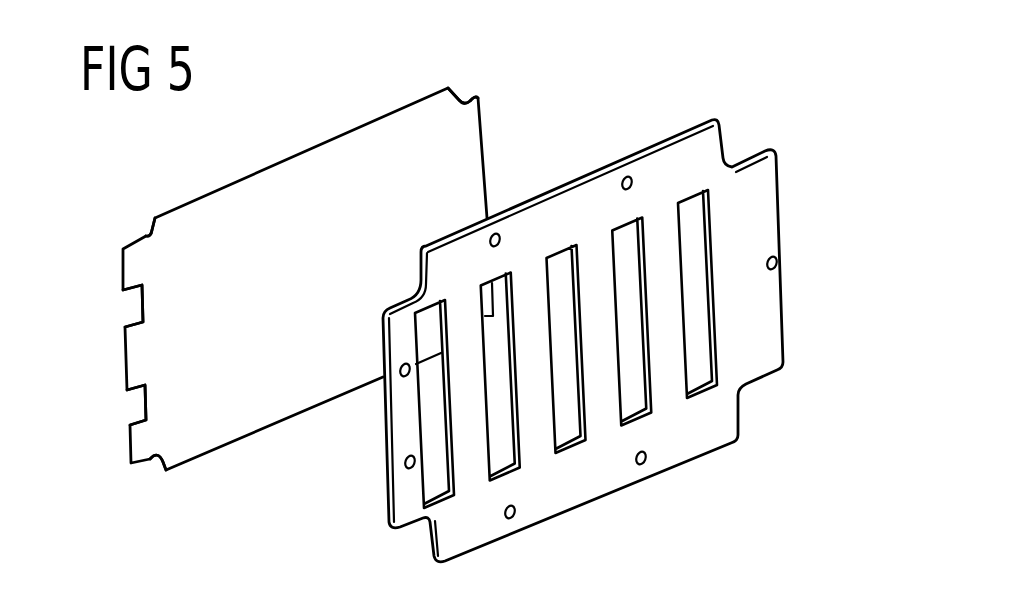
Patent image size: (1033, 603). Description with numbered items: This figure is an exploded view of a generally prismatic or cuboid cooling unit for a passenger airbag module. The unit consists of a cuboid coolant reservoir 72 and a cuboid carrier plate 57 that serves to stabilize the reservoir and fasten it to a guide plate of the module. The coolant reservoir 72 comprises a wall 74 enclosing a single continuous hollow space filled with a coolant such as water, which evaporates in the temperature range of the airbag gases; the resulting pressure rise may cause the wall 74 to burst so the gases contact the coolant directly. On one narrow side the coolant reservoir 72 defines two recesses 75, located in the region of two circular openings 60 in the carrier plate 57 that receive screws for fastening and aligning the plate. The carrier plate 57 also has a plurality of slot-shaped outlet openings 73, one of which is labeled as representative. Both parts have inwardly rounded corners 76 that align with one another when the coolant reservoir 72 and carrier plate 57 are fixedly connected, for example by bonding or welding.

The carrier plate 57 is at (787, 187).
The openings 60 is at (625, 178).
The coolant reservoir 72 is at (123, 362).
The outlet openings 73 is at (700, 342).
The wall 74 is at (448, 143).
The recesses 75 is at (132, 306).
The inwardly rounded corners 76 is at (463, 98).